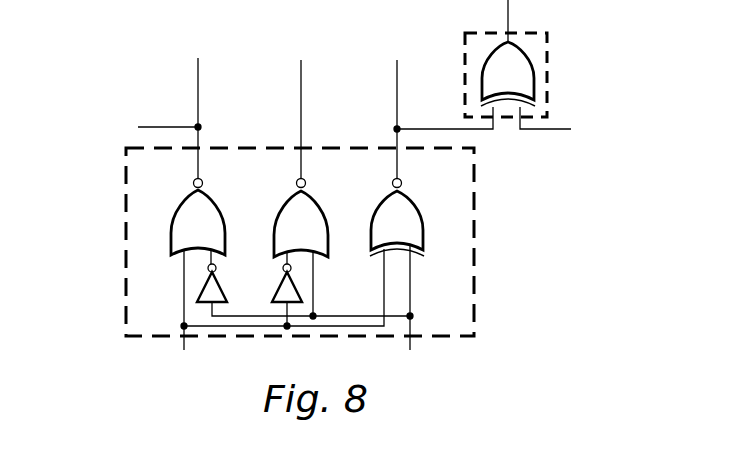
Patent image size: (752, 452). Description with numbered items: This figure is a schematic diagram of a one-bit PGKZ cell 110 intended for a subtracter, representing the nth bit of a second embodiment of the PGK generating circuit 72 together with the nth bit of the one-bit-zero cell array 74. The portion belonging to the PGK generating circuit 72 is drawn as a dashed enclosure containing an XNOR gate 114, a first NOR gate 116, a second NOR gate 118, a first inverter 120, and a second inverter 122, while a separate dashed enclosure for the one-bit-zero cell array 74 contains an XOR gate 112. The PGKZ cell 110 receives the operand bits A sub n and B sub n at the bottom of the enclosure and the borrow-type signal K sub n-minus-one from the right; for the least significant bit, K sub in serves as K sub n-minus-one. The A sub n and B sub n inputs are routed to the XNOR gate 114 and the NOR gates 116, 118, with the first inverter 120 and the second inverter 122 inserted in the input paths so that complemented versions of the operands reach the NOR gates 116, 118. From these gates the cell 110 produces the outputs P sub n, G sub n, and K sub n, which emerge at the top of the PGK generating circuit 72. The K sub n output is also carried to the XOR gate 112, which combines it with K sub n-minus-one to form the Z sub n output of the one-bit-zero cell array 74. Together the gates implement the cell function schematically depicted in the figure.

The one-bit PGKZ cell 110 is at (133, 80).
The PGK generating circuit 72 is at (176, 191).
The one-bit-zero cell array 74 is at (552, 35).
The XOR gate 112 is at (518, 80).
The XNOR gate 114 is at (410, 218).
The first NOR gate 116 is at (316, 212).
The second NOR gate 118 is at (209, 216).
The first inverter 120 is at (300, 284).
The second inverter 122 is at (246, 295).